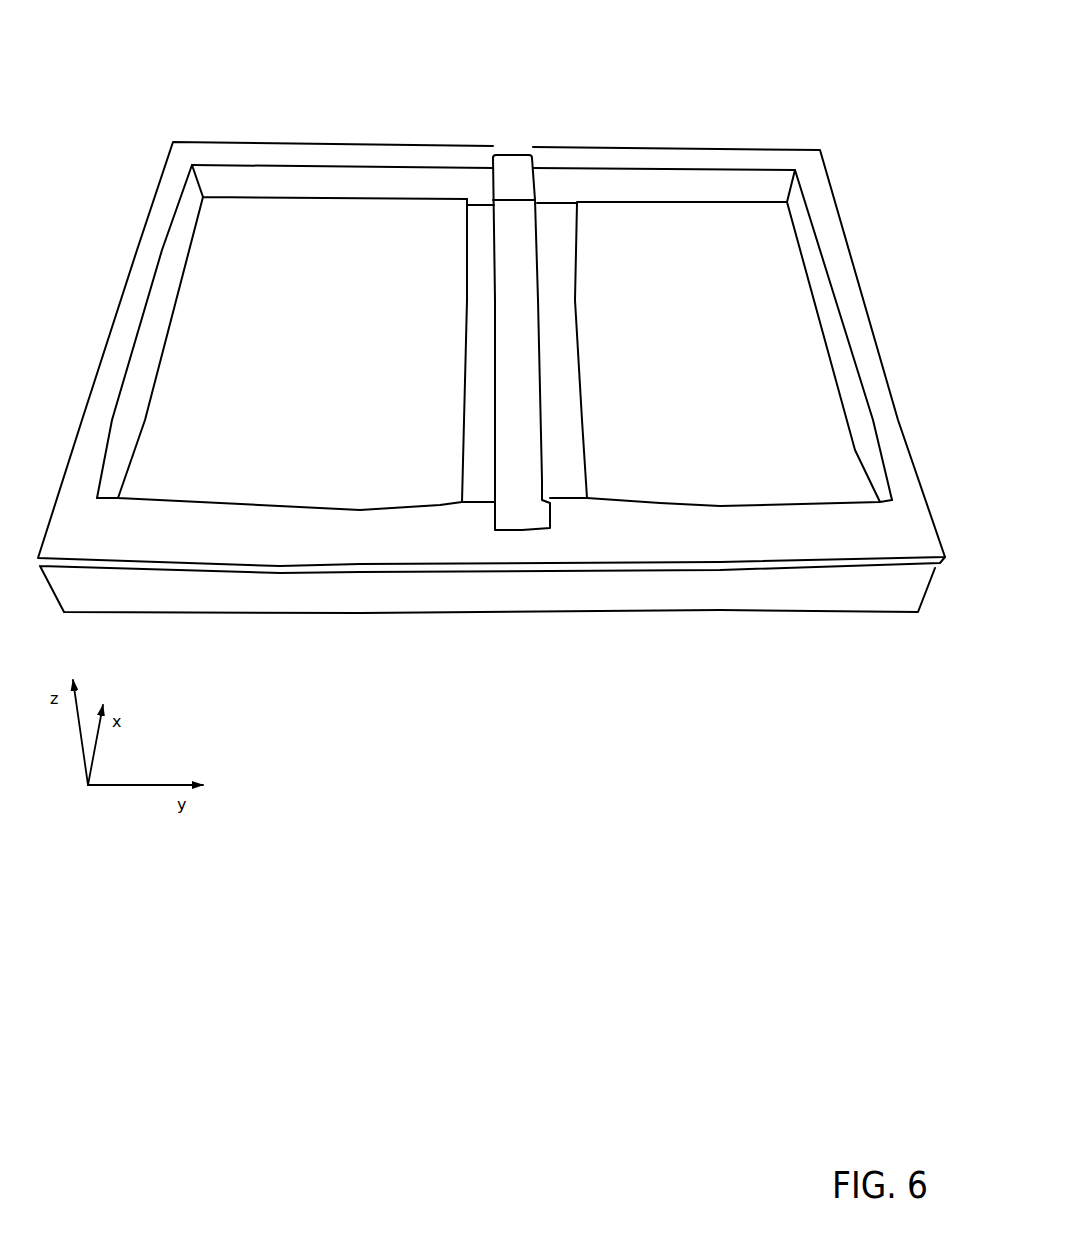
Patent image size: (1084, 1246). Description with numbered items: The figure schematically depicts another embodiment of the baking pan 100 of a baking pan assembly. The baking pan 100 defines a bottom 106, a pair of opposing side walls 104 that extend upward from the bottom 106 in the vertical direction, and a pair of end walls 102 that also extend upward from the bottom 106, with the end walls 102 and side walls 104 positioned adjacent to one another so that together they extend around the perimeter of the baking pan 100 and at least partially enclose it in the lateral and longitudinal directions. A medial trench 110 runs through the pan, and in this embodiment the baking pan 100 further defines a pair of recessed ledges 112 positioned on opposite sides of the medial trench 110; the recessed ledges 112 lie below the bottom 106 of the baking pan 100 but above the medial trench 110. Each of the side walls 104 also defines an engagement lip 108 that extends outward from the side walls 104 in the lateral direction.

The baking pan 100 is at (652, 107).
The end walls 102 is at (148, 268).
The side walls 104 is at (300, 155).
The bottom 106 is at (494, 353).
The engagement lip 108 is at (447, 568).
The medial trench 110 is at (512, 303).
The recessed ledges 112 is at (473, 370).